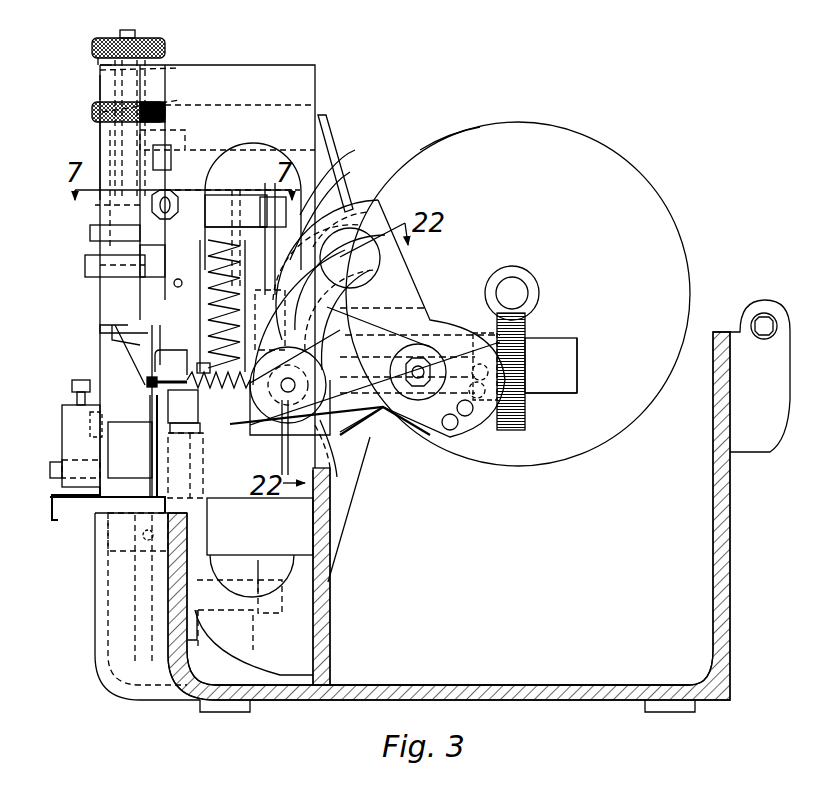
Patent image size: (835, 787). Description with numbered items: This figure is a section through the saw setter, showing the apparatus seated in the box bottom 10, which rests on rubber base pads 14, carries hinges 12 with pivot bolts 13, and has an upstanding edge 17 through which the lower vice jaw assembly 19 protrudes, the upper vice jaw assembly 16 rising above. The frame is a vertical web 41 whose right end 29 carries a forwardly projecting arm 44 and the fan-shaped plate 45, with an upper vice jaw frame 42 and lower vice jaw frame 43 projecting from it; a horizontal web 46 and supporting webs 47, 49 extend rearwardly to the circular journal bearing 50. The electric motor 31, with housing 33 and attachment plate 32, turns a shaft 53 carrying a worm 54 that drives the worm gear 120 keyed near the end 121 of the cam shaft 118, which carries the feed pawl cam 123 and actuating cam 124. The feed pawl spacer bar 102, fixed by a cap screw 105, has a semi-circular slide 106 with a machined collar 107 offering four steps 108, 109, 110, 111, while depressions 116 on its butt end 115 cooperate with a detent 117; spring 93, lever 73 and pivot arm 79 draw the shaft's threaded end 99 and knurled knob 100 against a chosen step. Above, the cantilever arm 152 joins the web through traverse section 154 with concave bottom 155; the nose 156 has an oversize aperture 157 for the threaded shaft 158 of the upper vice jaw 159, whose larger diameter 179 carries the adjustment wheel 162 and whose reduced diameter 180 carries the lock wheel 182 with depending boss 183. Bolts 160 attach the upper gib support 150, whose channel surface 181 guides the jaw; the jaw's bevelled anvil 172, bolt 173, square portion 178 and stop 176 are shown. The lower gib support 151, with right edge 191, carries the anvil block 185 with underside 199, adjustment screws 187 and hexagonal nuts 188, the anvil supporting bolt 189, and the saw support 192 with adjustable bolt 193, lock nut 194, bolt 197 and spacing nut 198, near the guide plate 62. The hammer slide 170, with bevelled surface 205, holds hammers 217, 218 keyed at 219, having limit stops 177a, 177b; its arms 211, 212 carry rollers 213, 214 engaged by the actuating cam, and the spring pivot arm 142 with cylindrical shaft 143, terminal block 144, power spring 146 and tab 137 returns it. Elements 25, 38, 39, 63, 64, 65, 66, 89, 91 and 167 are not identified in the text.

The bottom 10 is at (527, 697).
The hinges 12 is at (758, 310).
The pivot bolts 13 is at (766, 315).
The base pads 14 is at (222, 705).
The upper vice jaw assembly 16 is at (92, 128).
The upstanding edge 17 is at (97, 540).
The lower vice jaw assembly 19 is at (95, 396).
The partition wall 25 is at (330, 655).
The right end 29 is at (305, 548).
The electric motor 31 is at (586, 122).
The attachment plate 32 is at (326, 115).
The housing 33 is at (463, 124).
The block 38 is at (198, 425).
The guide 39 is at (203, 458).
The vertical web 41 is at (318, 520).
The upper vice jaw frame 42 is at (262, 63).
The lower vice jaw frame 43 is at (280, 690).
The forwardly projecting arm 44 is at (260, 526).
The fan-shaped plate 45 is at (527, 362).
The horizontal web 46 is at (372, 420).
The supporting web 47 is at (330, 165).
The supporting web 49 is at (345, 510).
The circular journal bearing 50 is at (420, 344).
The shaft 53 is at (522, 290).
The worm 54 is at (516, 275).
The guide plate 62 is at (50, 508).
The wire 63 is at (178, 350).
The block 64 is at (152, 450).
The bracket 65 is at (110, 500).
The wire end 66 is at (52, 520).
The lever 73 is at (147, 382).
The pivot arm 79 is at (203, 368).
The slot 89 is at (268, 320).
The arc 91 is at (320, 256).
The spring 93 is at (200, 406).
The threaded end 99 is at (352, 470).
The knurled knob 100 is at (345, 450).
The feed pawl spacer bar 102 is at (415, 265).
The cap screw 105 is at (422, 362).
The semi-circular slide 106 is at (362, 220).
The machined collar 107 is at (370, 228).
The step 108 is at (368, 275).
The step 109 is at (340, 302).
The step 110 is at (338, 332).
The step 111 is at (340, 350).
The butt end 115 is at (475, 432).
The semi-circular depressions 116 is at (458, 440).
The detent 117 is at (496, 352).
The cam shaft 118 is at (554, 395).
The worm gear 120 is at (528, 322).
The end 121 is at (565, 350).
The feed pawl cam 123 is at (280, 464).
The actuating cam 124 is at (264, 183).
The outwardly turned tab 137 is at (252, 240).
The spring pivot arm 142 is at (276, 420).
The cylindrical shaft 143 is at (215, 262).
The rectangular terminal block 144 is at (218, 384).
The power spring 146 is at (286, 215).
The upper gib support 150 is at (100, 144).
The lower gib support 151 is at (100, 505).
The cantilever arm 152 is at (204, 190).
The traverse section 154 is at (280, 115).
The upwardly concave bottom 155 is at (262, 145).
The nose 156 is at (100, 88).
The oversize aperture 157 is at (140, 76).
The threaded shaft 158 is at (128, 35).
The upper vice jaw 159 is at (122, 340).
The bolts 160 is at (165, 148).
The upper vice jaw adjustment wheel 162 is at (92, 110).
The nut 167 is at (152, 205).
The hammer slide 170 is at (200, 642).
The bevelled anvil 172 is at (128, 352).
The bolt 173 is at (85, 265).
The stop 176 is at (135, 292).
The limit stop 177a is at (130, 575).
The limit stop 177b is at (135, 280).
The reduced square portion 178 is at (140, 215).
The larger threaded diameter 179 is at (140, 130).
The reduced diameter portion 180 is at (100, 64).
The channel surface 181 is at (110, 158).
The lock wheel 182 is at (152, 40).
The depending boss 183 is at (105, 60).
The anvil block 185 is at (140, 460).
The adjustment screws 187 is at (118, 396).
The hexagonal nuts 188 is at (112, 378).
The anvil supporting bolt 189 is at (88, 426).
The right edge 191 is at (100, 560).
The saw support 192 is at (62, 434).
The adjustable bolt 193 is at (72, 387).
The lock nut 194 is at (77, 402).
The bolt 197 is at (50, 470).
The spacing nut 198 is at (55, 495).
The underside 199 is at (145, 536).
The bevelled surface 205 is at (128, 322).
The inwardly projecting arm 211 is at (245, 614).
The inwardly projecting arm 212 is at (236, 211).
The roller 213 is at (270, 613).
The roller 214 is at (335, 186).
The hammer 217 is at (115, 246).
The hammer 218 is at (130, 562).
The key location 219 is at (175, 287).